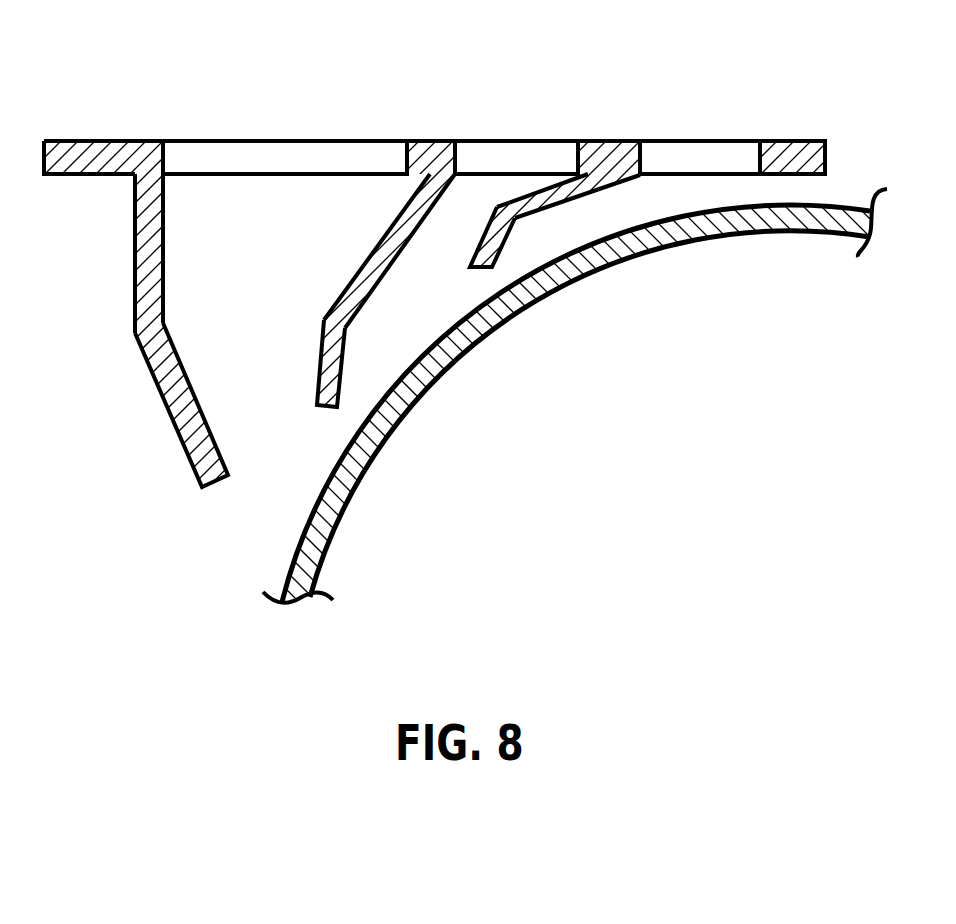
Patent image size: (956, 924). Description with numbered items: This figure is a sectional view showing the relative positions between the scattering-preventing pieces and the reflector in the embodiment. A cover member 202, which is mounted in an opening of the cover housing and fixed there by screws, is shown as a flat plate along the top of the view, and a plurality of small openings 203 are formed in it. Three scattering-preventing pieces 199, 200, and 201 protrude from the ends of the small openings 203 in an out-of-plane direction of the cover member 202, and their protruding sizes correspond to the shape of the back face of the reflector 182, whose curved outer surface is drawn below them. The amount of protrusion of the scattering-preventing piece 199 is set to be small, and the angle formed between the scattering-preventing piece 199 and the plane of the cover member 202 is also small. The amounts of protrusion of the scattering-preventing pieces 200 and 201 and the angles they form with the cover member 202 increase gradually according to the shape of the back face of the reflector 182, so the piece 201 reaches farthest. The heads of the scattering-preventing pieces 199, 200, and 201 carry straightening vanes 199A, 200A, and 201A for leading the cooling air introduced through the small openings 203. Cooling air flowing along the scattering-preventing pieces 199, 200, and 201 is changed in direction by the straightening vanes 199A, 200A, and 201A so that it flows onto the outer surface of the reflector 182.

The reflector 182 is at (328, 560).
The scattering-preventing piece 199 is at (568, 190).
The straightening vane 199A is at (500, 252).
The scattering-preventing piece 200 is at (372, 270).
The straightening vane 200A is at (342, 378).
The scattering-preventing piece 201 is at (150, 268).
The straightening vane 201A is at (185, 450).
The cover member 202 is at (94, 140).
The small opening 203 is at (282, 128).